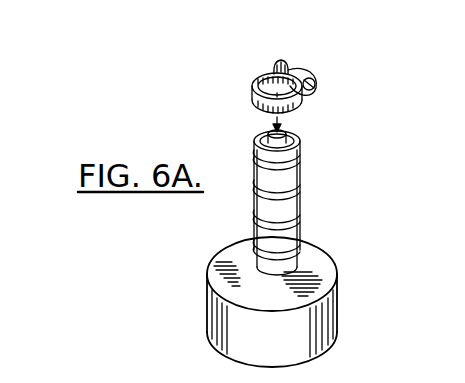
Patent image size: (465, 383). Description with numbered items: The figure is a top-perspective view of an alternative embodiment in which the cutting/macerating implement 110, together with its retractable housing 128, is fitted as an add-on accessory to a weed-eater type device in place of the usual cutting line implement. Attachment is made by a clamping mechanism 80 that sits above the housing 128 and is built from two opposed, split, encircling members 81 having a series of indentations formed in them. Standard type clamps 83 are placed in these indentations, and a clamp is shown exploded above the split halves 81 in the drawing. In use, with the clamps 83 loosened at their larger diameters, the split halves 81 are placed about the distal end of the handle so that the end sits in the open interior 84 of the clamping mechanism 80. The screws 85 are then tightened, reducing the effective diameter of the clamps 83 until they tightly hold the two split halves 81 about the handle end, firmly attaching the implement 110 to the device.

The clamping mechanism 80 is at (245, 130).
The split encircling members 81 is at (300, 150).
The clamps 83 is at (258, 72).
The open interior 84 is at (260, 142).
The screws 85 is at (317, 83).
The cutting/macerating implement 110 is at (320, 209).
The retractable housing 128 is at (337, 297).